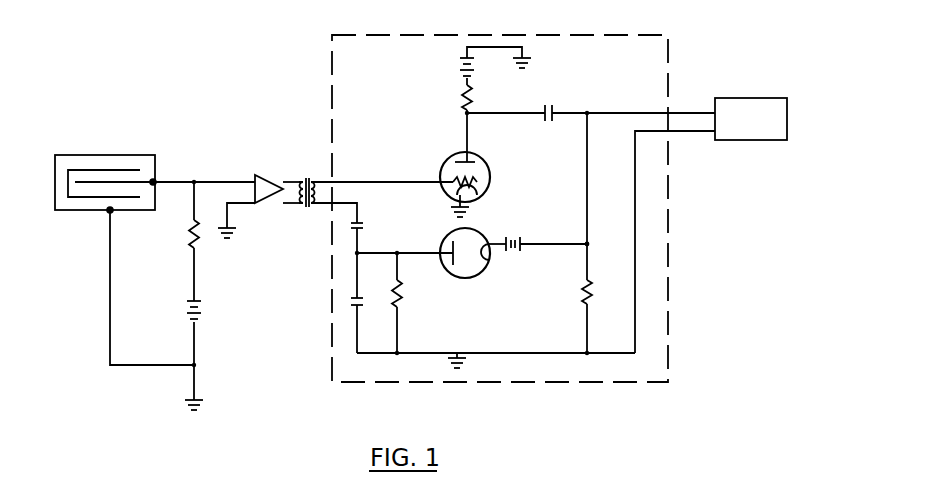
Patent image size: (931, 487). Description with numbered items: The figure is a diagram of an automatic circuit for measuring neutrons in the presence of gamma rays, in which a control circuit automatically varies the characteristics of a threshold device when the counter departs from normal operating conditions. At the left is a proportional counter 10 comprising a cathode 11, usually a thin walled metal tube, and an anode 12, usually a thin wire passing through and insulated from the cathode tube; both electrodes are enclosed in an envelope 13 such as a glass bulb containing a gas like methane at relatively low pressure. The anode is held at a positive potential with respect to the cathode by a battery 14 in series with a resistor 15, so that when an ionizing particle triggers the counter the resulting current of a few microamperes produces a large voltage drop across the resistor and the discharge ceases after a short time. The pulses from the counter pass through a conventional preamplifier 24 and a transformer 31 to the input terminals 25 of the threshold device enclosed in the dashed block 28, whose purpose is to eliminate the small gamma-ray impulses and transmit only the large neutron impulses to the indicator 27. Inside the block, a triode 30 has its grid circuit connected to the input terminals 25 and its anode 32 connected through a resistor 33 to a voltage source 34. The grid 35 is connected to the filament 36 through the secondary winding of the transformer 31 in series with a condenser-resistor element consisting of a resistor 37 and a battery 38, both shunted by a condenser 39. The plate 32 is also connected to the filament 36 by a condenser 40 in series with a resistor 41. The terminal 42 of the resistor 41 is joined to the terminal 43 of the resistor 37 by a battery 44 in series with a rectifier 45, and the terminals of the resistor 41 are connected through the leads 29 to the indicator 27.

The proportional counter 10 is at (66, 155).
The cathode 11 is at (98, 168).
The anode 12 is at (143, 180).
The envelope 13 is at (75, 211).
The battery 14 is at (200, 314).
The resistor 15 is at (190, 236).
The preamplifier 24 is at (272, 178).
The input terminals 25 is at (322, 206).
The indicator 27 is at (760, 105).
The threshold device 28 is at (670, 333).
The leads 29 is at (680, 128).
The triode 30 is at (488, 173).
The transformer 31 is at (314, 180).
The anode 32 is at (462, 160).
The resistor 33 is at (470, 97).
The voltage source 34 is at (462, 67).
The grid 35 is at (452, 184).
The filament 36 is at (488, 196).
The resistor 37 is at (399, 292).
The battery 38 is at (362, 222).
The condenser 39 is at (359, 302).
The condenser 40 is at (549, 108).
The resistor 41 is at (593, 289).
The terminal 42 is at (589, 241).
The terminal 43 is at (397, 253).
The battery 44 is at (516, 238).
The rectifier 45 is at (470, 268).